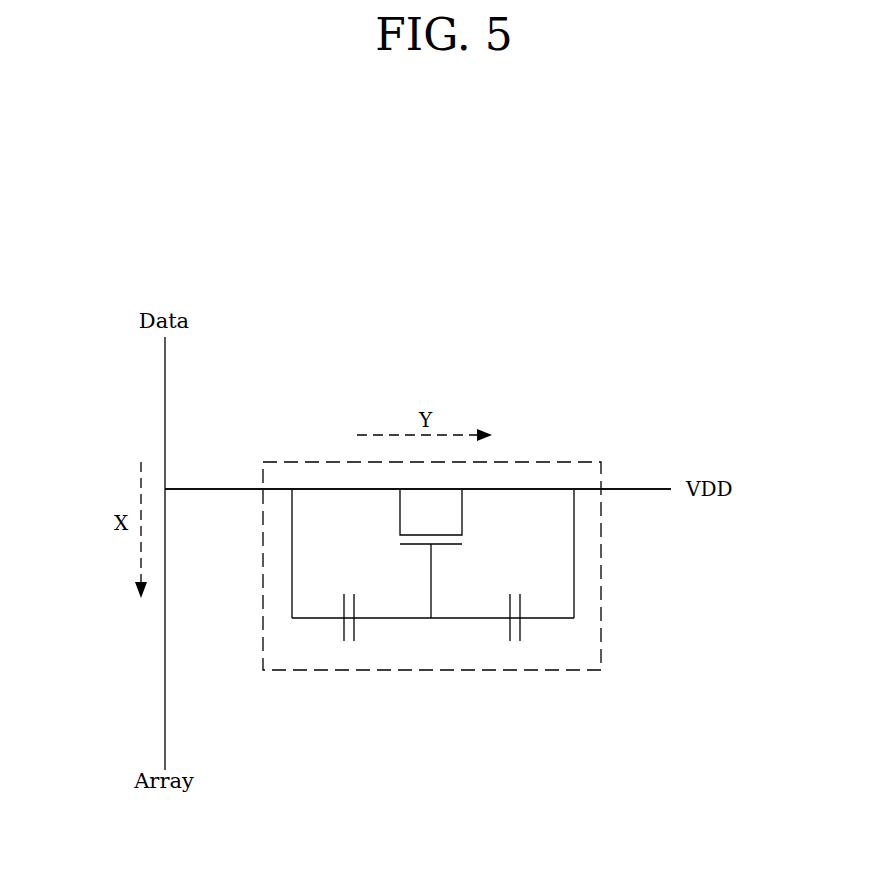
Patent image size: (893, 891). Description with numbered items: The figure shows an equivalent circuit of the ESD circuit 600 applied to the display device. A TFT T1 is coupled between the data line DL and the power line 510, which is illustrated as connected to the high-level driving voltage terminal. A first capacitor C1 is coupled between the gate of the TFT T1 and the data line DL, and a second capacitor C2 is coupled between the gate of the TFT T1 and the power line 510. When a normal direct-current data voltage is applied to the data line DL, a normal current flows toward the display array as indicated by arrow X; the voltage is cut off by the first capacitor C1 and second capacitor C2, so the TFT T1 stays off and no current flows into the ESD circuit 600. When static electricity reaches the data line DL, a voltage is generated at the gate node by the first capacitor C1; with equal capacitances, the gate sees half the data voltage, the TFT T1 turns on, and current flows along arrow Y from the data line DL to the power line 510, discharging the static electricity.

The ESD circuit 600 is at (567, 461).
The power line 510 is at (632, 489).
The data line DL is at (165, 410).
The TFT T1 is at (431, 553).
The first capacitor C1 is at (332, 623).
The second capacitor C2 is at (533, 623).